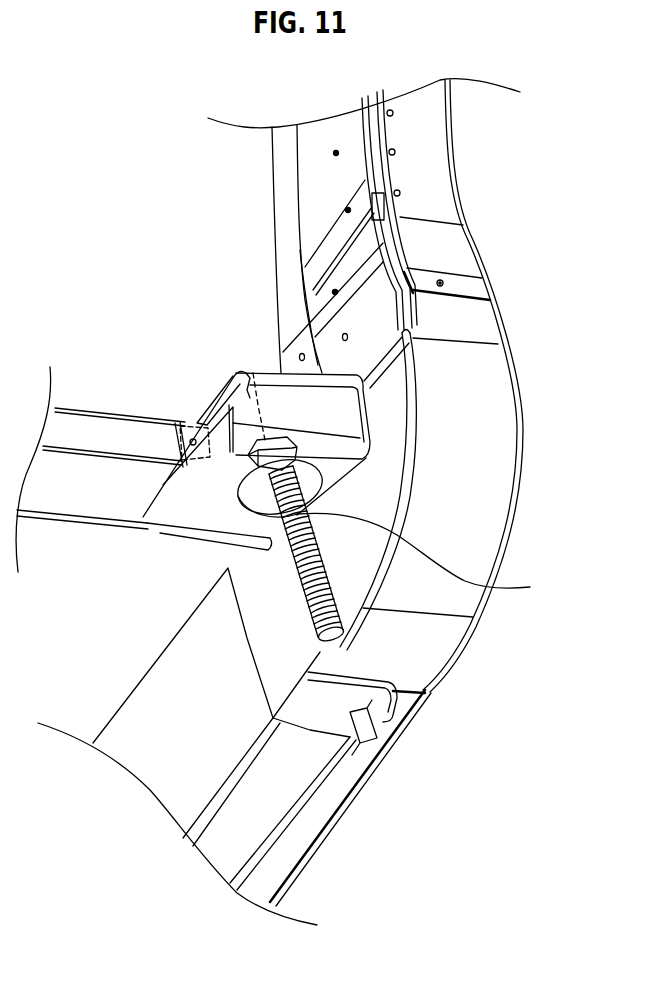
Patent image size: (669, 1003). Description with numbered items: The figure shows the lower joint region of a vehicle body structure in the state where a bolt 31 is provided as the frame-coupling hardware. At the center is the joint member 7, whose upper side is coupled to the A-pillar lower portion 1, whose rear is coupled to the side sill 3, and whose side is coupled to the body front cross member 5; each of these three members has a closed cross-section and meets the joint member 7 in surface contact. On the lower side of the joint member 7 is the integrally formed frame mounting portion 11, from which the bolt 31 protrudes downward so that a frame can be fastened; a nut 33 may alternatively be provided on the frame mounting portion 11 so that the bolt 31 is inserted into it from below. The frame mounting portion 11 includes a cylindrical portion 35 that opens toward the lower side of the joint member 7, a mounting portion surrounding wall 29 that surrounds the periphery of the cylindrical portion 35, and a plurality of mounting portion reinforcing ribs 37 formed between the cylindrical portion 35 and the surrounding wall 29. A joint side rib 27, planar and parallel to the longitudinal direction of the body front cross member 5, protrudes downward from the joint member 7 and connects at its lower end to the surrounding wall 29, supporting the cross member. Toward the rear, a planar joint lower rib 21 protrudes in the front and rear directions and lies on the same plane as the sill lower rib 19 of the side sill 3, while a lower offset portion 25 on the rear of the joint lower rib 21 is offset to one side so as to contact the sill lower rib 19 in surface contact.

The A-pillar lower portion 1 is at (423, 157).
The side sill 3 is at (160, 706).
The body front cross member 5 is at (88, 430).
The joint member 7 is at (485, 450).
The frame mounting portion 11 is at (200, 513).
The sill lower rib 19 is at (303, 818).
The joint lower rib 21 is at (383, 707).
The lower offset portion 25 is at (360, 738).
The joint side rib 27 is at (147, 511).
The mounting portion surrounding wall 29 is at (177, 513).
The bolt 31 is at (530, 587).
The nut 33 is at (253, 373).
The cylindrical portion 35 is at (253, 492).
The mounting portion reinforcing ribs 37 is at (196, 424).